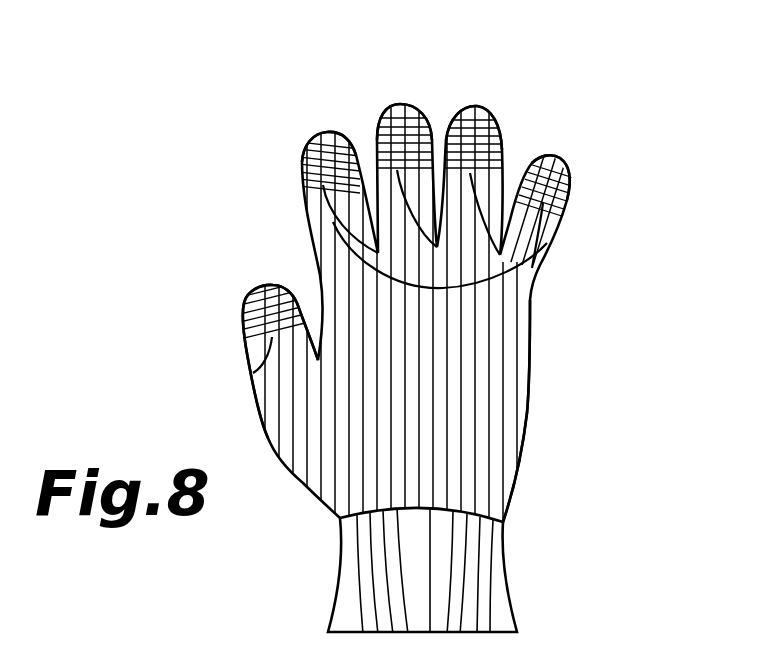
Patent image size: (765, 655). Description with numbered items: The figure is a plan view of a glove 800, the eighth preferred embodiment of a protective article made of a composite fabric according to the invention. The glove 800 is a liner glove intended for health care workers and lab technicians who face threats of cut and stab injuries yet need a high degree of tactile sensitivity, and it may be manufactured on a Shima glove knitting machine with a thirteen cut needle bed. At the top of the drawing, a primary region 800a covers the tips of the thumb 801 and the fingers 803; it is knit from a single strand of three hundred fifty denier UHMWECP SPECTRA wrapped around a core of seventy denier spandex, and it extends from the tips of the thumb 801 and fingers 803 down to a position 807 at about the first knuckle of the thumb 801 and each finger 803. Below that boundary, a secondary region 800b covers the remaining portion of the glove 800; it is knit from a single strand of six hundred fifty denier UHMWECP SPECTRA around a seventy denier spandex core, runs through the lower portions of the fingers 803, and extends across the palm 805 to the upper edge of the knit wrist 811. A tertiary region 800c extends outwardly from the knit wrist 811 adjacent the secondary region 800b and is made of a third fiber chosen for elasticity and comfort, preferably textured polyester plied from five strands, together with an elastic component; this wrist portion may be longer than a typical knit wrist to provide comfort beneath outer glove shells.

The glove 800 is at (560, 358).
The primary region 800a is at (400, 147).
The secondary region 800b is at (427, 407).
The tertiary region 800c is at (415, 573).
The thumb 801 is at (243, 293).
The fingers 803 is at (543, 157).
The palm 805 is at (520, 478).
The position at about the first knuckle 807 is at (253, 373).
The knit wrist 811 is at (503, 592).